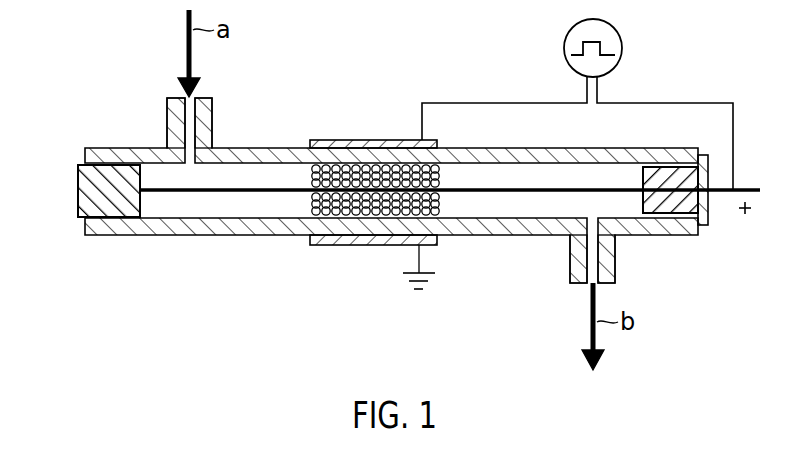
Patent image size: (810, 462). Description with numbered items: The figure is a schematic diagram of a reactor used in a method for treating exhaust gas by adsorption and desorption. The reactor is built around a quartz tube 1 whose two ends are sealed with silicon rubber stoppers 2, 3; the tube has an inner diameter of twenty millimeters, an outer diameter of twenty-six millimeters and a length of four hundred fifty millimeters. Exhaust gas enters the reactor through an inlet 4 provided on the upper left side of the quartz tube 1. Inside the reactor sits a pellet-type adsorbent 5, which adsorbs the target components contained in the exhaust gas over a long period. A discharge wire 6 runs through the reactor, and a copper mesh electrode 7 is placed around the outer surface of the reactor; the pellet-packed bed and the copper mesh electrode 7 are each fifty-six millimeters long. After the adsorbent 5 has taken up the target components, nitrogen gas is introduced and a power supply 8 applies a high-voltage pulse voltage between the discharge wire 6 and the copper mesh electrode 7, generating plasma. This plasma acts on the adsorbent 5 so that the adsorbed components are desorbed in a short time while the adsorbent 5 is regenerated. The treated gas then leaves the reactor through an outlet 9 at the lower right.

The quartz tube 1 is at (155, 236).
The silicon rubber stopper 2 is at (78, 192).
The silicon rubber stopper 3 is at (668, 222).
The inlet 4 is at (212, 112).
The pellet-type adsorbent 5 is at (310, 207).
The discharge wire 6 is at (490, 192).
The copper mesh electrode 7 is at (365, 138).
The power supply 8 is at (620, 32).
The outlet 9 is at (617, 258).